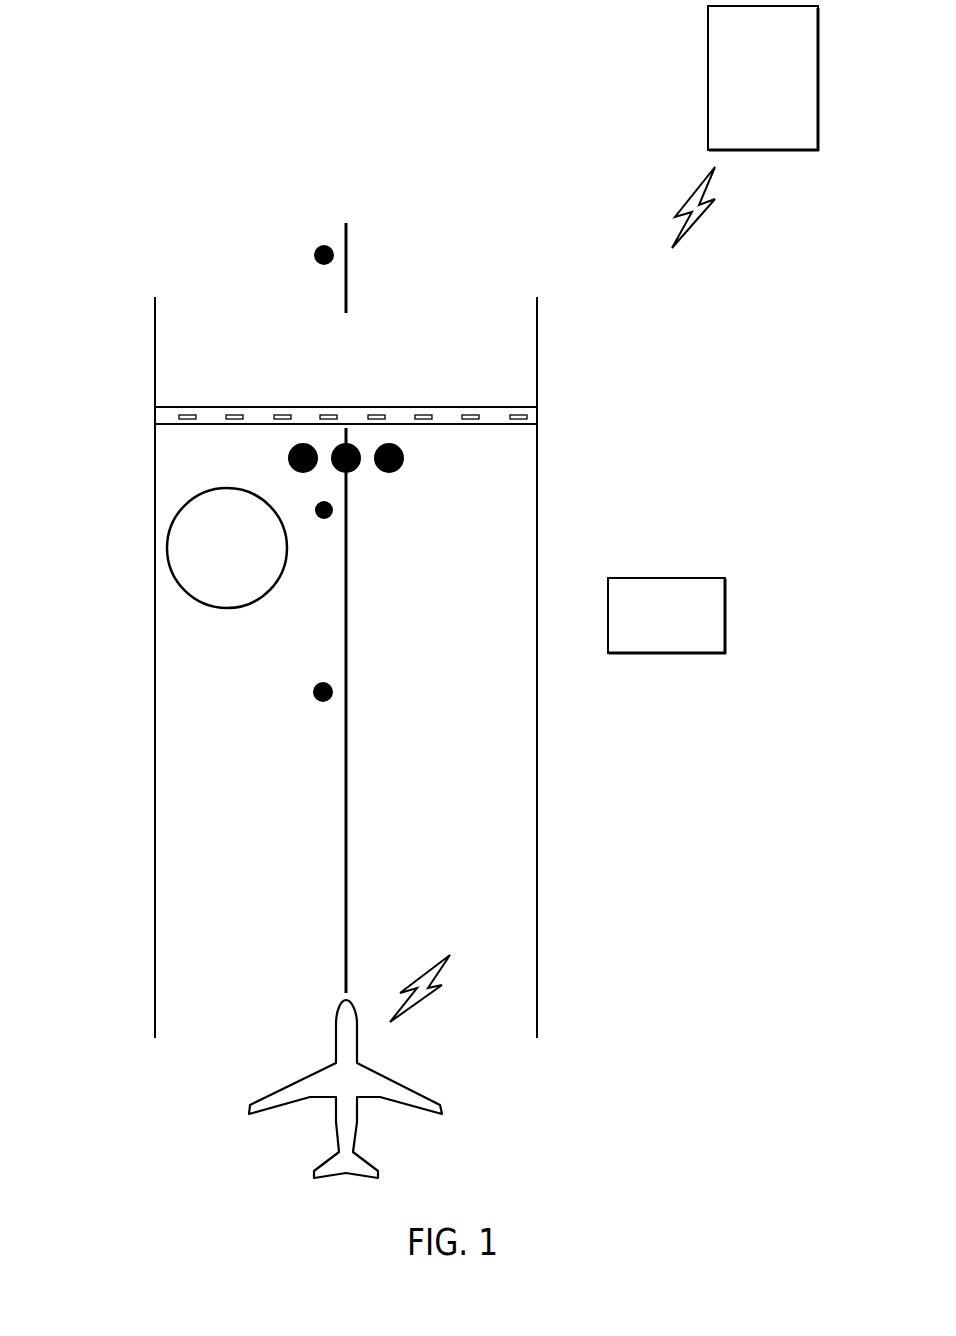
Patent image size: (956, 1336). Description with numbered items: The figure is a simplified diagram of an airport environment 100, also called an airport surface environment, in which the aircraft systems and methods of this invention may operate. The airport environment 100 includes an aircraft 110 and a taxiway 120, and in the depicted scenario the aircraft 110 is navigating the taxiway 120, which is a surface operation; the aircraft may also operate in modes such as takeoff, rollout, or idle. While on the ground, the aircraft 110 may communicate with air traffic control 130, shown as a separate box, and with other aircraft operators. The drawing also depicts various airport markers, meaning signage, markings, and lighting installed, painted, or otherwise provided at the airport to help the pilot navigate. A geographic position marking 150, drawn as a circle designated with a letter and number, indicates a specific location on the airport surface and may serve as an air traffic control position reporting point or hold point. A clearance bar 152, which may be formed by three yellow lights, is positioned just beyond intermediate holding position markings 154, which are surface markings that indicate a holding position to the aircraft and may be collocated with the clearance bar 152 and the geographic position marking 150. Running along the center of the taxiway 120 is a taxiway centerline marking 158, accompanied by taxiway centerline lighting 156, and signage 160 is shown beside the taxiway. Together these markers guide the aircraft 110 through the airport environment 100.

The airport environment 100 is at (128, 142).
The aircraft 110 is at (315, 1068).
The taxiway 120 is at (172, 343).
The air traffic control 130 is at (708, 78).
The geographic position marking 150 is at (228, 608).
The clearance bar 152 is at (391, 473).
The intermediate holding position markings 154 is at (424, 407).
The taxiway centerline lighting 156 is at (313, 693).
The taxiway centerline marking 158 is at (347, 656).
The signage 160 is at (662, 578).